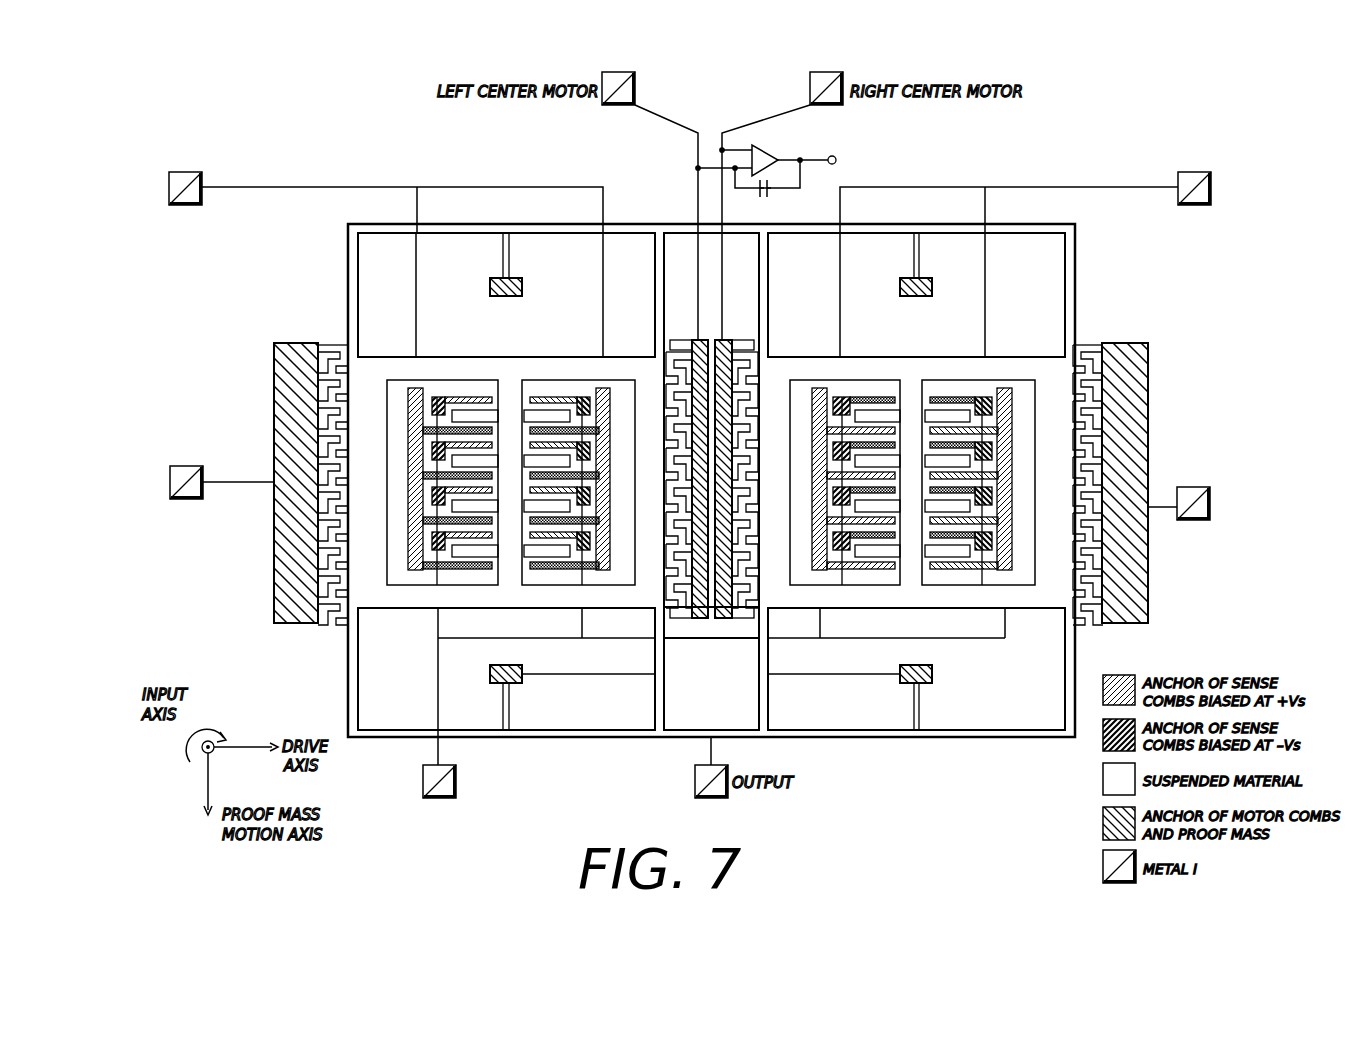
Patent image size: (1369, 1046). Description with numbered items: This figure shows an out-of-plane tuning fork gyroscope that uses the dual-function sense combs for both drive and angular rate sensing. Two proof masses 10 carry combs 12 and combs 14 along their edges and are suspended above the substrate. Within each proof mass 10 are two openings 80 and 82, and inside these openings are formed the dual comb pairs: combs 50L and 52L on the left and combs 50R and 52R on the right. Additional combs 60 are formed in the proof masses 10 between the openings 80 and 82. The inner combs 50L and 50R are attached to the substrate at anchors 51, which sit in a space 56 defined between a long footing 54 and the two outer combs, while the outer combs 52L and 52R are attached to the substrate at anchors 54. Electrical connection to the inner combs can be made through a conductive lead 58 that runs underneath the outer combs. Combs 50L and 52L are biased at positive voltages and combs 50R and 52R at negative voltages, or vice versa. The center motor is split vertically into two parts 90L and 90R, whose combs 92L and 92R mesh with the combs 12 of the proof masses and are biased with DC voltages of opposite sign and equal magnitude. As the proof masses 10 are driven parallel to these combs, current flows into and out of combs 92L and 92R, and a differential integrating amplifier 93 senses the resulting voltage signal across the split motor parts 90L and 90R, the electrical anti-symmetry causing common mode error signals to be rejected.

The proof mass 10 is at (432, 370).
The comb 12 is at (672, 490).
The comb 14 is at (343, 357).
The left inner sense comb 50L is at (540, 395).
The right inner sense comb 50R is at (923, 395).
The anchor 51 is at (581, 397).
The left outer sense comb 52L is at (472, 575).
The right outer sense comb 52R is at (850, 575).
The long footing 54 is at (410, 517).
The space 56 is at (602, 392).
The conductive lead 58 is at (438, 672).
The comb 60 is at (515, 598).
The opening 80 is at (398, 392).
The opening 82 is at (530, 388).
The left inner motor part 90L is at (700, 620).
The right inner motor part 90R is at (718, 620).
The left inner motor comb 92L is at (676, 367).
The right inner motor comb 92R is at (737, 367).
The differential integrating amplifier 93 is at (770, 150).